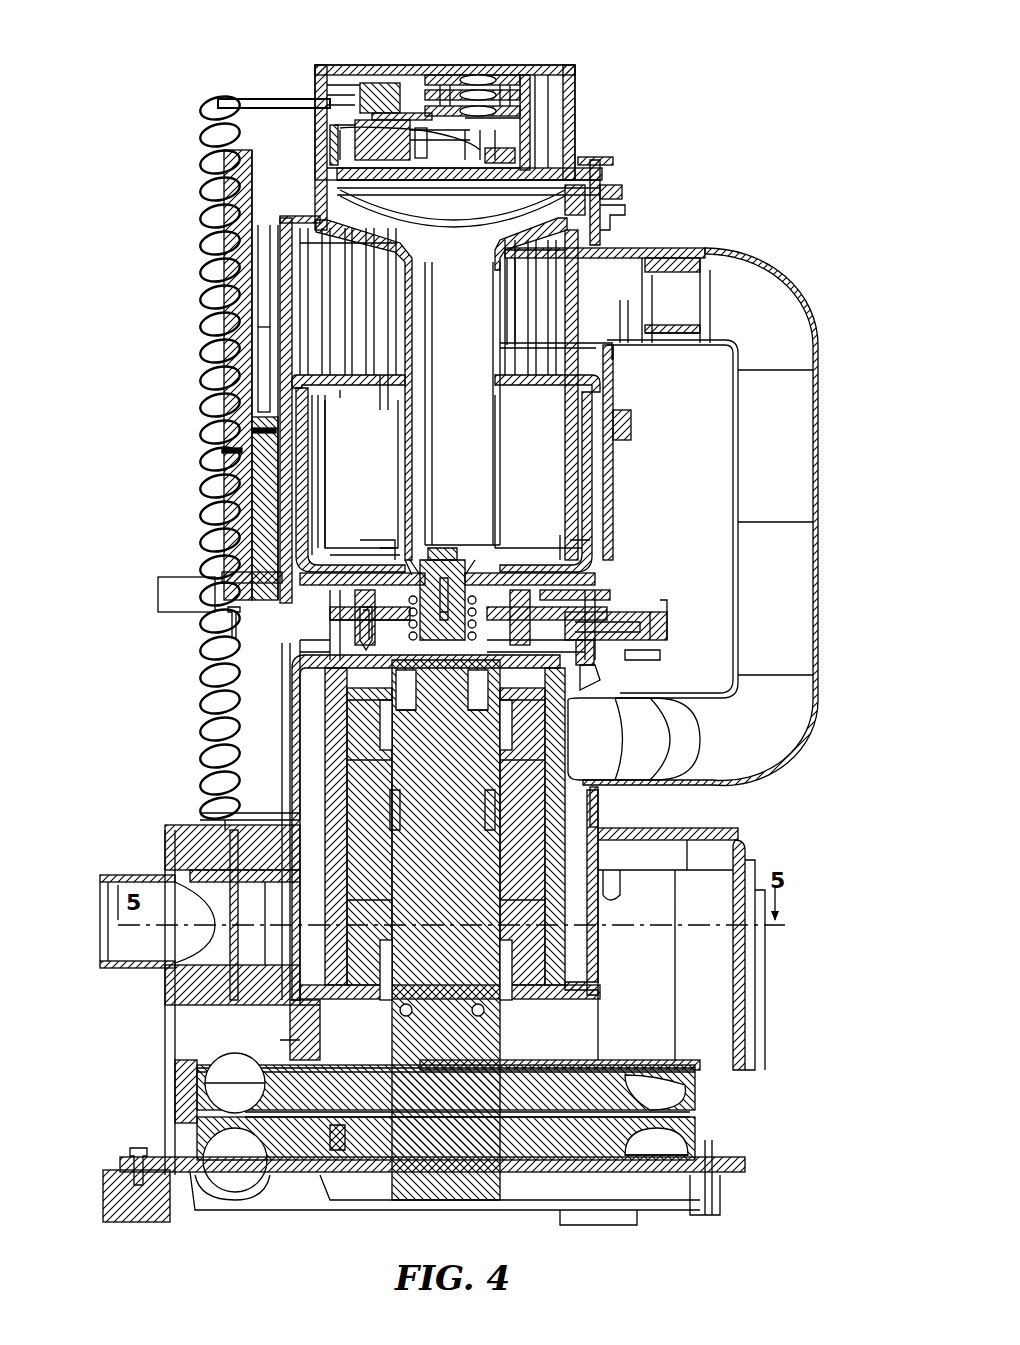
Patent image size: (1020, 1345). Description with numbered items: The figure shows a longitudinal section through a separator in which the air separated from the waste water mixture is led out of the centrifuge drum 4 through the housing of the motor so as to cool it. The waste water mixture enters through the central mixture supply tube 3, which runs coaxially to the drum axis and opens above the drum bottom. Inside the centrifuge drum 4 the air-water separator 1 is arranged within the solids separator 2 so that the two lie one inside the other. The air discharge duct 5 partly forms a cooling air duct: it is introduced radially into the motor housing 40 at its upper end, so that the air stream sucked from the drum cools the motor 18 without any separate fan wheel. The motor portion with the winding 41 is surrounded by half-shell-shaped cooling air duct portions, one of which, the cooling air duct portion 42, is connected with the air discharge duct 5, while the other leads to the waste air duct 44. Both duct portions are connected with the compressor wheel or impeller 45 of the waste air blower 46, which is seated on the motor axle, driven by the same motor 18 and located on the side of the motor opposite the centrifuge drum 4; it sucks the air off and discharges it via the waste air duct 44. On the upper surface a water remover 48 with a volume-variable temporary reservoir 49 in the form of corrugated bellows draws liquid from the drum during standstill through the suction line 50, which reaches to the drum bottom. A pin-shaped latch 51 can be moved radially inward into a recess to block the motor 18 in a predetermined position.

The air-water separator 1 is at (348, 532).
The solids separator 2 is at (575, 400).
The mixture supply tube 3 is at (402, 312).
The centrifuge drum 4 is at (556, 443).
The air discharge duct 5 is at (594, 284).
The motor 18 is at (346, 947).
The motor housing 40 is at (293, 726).
The winding 41 is at (360, 792).
The cooling air duct portion 42 is at (580, 668).
The waste air duct 44 is at (112, 890).
The compressor wheel or impeller 45 is at (686, 1086).
The waste air blower 46 is at (657, 1143).
The water remover 48 is at (542, 88).
The temporary reservoir 49 is at (446, 78).
The suction line 50 is at (432, 480).
The pin-shaped latch 51 is at (640, 658).